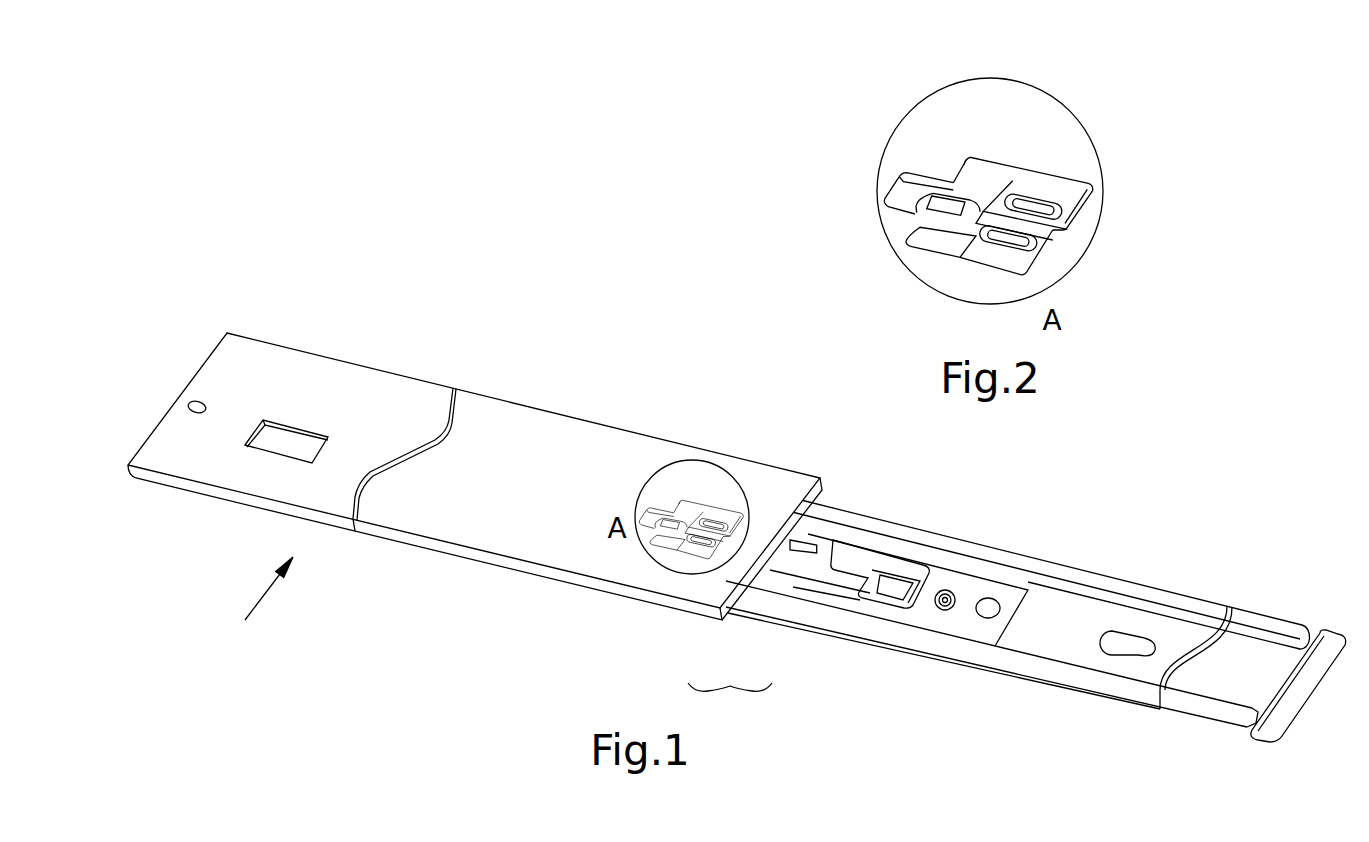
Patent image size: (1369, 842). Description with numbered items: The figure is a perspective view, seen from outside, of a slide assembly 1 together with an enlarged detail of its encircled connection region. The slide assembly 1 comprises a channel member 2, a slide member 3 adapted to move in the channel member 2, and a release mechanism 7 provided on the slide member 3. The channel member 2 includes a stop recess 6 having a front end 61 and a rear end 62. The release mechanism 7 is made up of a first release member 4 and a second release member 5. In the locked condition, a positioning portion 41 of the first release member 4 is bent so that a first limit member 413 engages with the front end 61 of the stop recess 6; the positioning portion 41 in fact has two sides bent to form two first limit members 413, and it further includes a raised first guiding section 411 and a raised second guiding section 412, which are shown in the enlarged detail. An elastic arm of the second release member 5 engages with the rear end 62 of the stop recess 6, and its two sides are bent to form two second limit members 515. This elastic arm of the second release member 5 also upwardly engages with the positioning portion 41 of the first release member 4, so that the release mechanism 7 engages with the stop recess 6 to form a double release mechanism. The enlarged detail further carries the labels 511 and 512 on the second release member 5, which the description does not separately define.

In FIG. 1, the slide assembly 1 is at (245, 623).
In FIG. 1, the channel member 2 is at (531, 408).
In FIG. 1, the slide member 3 is at (1072, 566).
In FIG. 1, the first release member 4 is at (688, 557).
In FIG. 1, the second release member 5 is at (953, 617).
In FIG. 1, the stop recess 6 is at (711, 507).
In FIG. 1, the release mechanism 7 is at (730, 704).
In FIG. 2, the positioning portion 41 is at (912, 207).
In FIG. 2, the first guiding section 411 is at (993, 238).
In FIG. 2, the second guiding section 412 is at (942, 205).
In FIG. 2, the first limit member 413 is at (1043, 255).
In FIG. 2, the first tab of sliding member 511 is at (993, 183).
In FIG. 2, the second tab of sliding member 512 is at (1032, 190).
In FIG. 2, the second limit member 515 is at (967, 167).
In FIG. 2, the front end 61 is at (1057, 237).
In FIG. 2, the rear end 62 is at (958, 173).